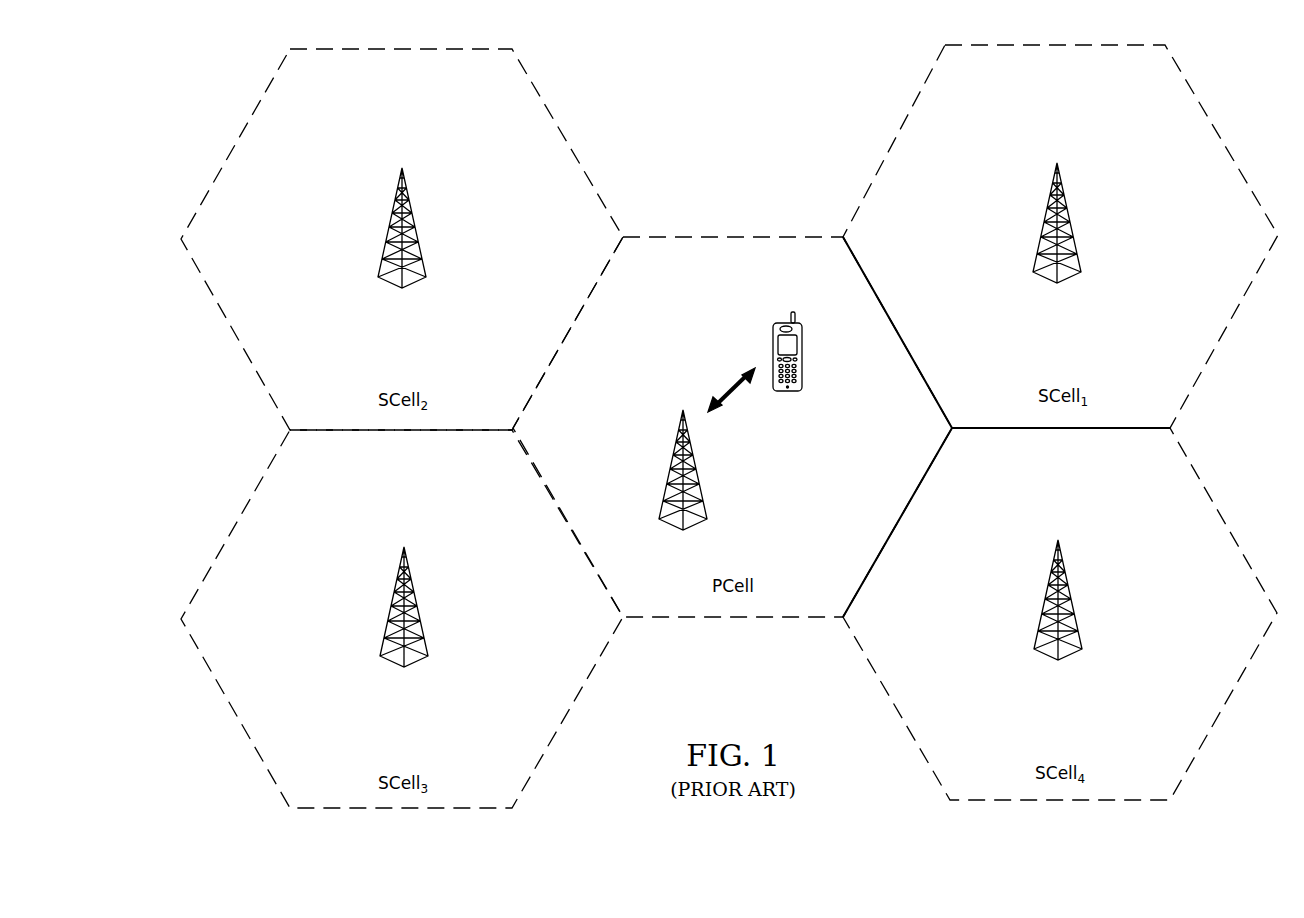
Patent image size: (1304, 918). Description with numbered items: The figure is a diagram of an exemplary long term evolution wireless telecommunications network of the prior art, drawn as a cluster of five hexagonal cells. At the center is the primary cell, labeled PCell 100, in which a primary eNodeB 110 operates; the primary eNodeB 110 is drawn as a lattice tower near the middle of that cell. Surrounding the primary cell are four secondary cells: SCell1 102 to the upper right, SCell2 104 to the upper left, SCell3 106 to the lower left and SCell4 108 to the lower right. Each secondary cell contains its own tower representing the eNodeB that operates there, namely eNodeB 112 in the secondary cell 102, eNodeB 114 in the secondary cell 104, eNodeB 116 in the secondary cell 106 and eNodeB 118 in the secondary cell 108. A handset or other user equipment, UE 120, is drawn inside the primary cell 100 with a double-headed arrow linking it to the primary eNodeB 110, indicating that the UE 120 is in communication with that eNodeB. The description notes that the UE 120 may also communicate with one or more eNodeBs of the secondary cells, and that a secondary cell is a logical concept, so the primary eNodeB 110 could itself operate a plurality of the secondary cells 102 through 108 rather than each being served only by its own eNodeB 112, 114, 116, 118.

The primary cell (PCell) 100 is at (718, 237).
The secondary cell SCell1 102 is at (1227, 148).
The secondary cell SCell2 104 is at (242, 137).
The secondary cell SCell3 106 is at (243, 722).
The secondary cell SCell4 108 is at (1222, 713).
The primary eNodeB 110 is at (670, 460).
The eNodeB 112 is at (1073, 212).
The eNodeB 114 is at (388, 218).
The eNodeB 116 is at (393, 596).
The eNodeB 118 is at (1073, 590).
The user equipment (UE) 120 is at (806, 355).